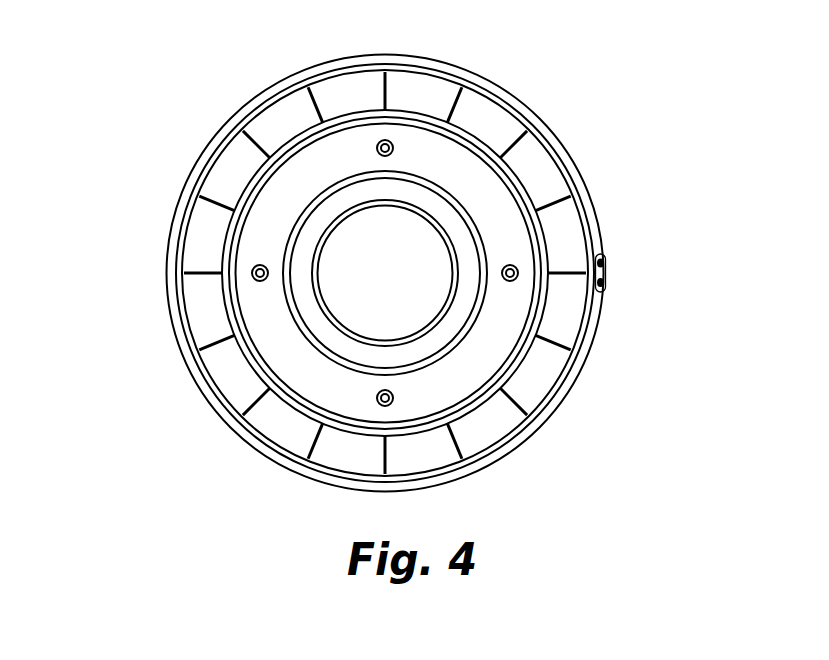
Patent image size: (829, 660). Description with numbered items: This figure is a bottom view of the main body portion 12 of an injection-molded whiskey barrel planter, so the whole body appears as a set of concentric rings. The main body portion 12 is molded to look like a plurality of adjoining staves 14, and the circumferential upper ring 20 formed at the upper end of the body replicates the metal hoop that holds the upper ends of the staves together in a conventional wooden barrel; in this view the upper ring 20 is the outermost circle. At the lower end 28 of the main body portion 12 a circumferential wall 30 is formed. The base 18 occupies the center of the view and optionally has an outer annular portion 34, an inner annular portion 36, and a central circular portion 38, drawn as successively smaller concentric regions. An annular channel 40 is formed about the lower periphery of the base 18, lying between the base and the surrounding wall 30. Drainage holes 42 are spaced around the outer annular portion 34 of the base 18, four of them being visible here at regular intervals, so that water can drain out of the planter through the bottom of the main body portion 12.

The main body portion 12 is at (140, 293).
The adjoining staves 14 is at (240, 375).
The base 18 is at (462, 392).
The circumferential upper ring 20 is at (177, 222).
The lower end 28 is at (603, 283).
The circumferential wall 30 is at (550, 240).
The outer annular portion 34 is at (449, 160).
The inner annular portion 36 is at (457, 230).
The central circular portion 38 is at (395, 293).
The annular channel 40 is at (498, 167).
The drainage holes 42 is at (258, 264).